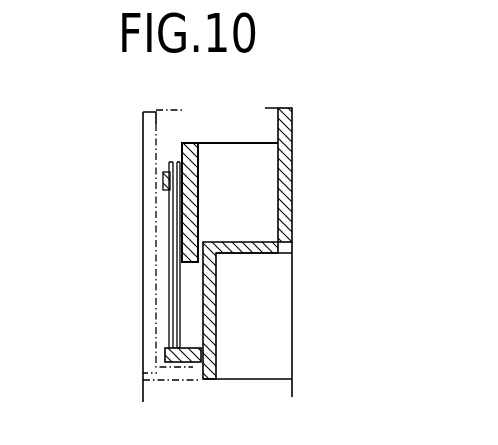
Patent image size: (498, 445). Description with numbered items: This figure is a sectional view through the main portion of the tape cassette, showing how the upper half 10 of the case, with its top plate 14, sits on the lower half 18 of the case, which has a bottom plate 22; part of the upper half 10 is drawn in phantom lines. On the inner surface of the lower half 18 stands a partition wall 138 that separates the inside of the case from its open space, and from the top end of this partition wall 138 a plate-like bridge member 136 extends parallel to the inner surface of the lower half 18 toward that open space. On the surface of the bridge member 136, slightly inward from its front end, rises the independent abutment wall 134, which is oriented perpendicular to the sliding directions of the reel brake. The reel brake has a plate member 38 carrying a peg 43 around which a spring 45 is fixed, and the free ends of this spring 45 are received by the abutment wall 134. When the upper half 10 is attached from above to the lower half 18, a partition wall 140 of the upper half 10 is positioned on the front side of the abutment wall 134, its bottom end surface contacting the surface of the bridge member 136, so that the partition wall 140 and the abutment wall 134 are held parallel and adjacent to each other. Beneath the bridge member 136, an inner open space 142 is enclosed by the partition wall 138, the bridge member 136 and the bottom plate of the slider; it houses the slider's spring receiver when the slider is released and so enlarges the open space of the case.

The upper half 10 is at (141, 300).
The top plate 14 is at (141, 128).
The lower half 18 is at (294, 218).
The bottom plate 22 is at (292, 158).
The plate member 38 is at (188, 142).
The peg 43 is at (164, 172).
The spring 45 is at (164, 250).
The independent abutment wall 134 is at (190, 368).
The bridge member 136 is at (215, 314).
The partition wall 138 is at (248, 240).
The partition wall 140 is at (143, 373).
The inner open space 142 is at (279, 333).